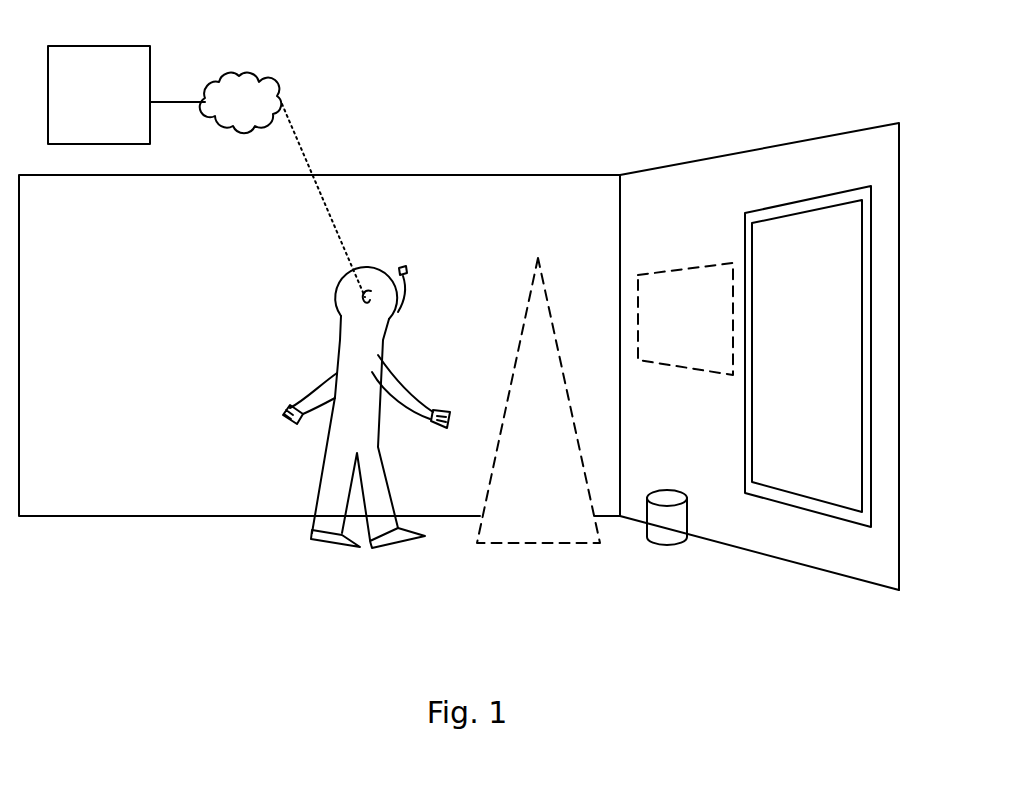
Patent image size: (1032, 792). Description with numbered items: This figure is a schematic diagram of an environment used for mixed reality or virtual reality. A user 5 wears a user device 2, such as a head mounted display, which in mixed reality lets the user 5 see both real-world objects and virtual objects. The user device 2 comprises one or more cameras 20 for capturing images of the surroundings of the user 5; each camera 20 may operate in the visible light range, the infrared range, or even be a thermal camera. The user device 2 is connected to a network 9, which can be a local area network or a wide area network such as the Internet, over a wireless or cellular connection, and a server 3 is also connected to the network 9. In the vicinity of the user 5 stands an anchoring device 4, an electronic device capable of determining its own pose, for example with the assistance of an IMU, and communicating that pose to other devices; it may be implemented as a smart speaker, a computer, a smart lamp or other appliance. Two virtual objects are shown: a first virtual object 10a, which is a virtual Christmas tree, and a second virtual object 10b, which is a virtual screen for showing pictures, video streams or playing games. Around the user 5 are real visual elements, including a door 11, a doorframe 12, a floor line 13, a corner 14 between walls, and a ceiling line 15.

The server 3 is at (99, 95).
The network 9 is at (257, 78).
The user device 2 is at (384, 365).
The user 5 is at (365, 262).
The camera 20 is at (403, 268).
The corner between walls 14 is at (618, 235).
The ceiling line 15 is at (788, 142).
The floor line 13 is at (748, 550).
The doorframe 12 is at (872, 217).
The door 11 is at (840, 312).
The first virtual object 10a is at (560, 367).
The second virtual object 10b is at (710, 263).
The anchoring device 4 is at (670, 490).